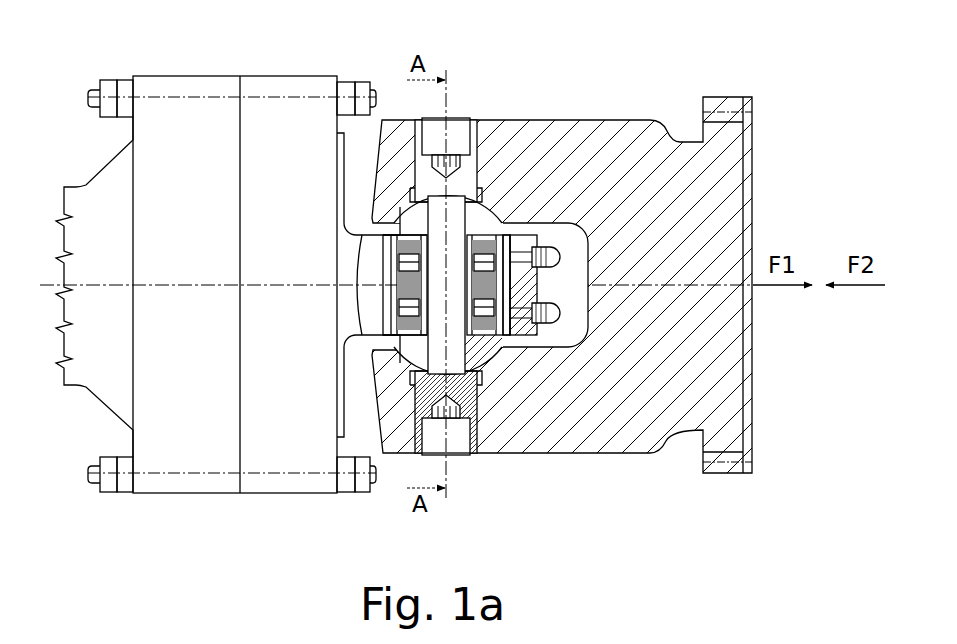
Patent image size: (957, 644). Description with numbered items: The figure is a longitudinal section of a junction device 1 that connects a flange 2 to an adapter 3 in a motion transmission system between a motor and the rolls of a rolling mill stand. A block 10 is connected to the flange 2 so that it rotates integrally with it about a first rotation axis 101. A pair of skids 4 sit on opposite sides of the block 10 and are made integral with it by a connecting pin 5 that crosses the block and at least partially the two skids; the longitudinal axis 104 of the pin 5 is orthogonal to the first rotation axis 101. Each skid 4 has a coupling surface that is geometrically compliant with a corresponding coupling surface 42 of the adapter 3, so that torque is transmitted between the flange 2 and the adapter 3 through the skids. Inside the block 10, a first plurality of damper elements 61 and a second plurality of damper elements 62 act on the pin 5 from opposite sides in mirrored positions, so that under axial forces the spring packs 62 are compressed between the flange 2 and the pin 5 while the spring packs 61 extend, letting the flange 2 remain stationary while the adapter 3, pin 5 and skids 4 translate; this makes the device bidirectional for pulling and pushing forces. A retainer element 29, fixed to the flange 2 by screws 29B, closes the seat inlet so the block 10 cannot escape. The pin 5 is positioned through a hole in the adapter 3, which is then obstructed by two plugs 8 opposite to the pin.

The junction device 1 is at (482, 230).
The flange 2 is at (272, 203).
The adapter 3 is at (600, 163).
The skid 4 is at (410, 355).
The connecting pin 5 is at (456, 328).
The plug 8 is at (458, 180).
The block 10 is at (418, 342).
The retainer element 29 is at (542, 222).
The screws 29B is at (560, 302).
The coupling surface 42 is at (502, 213).
The first damper element 61 is at (504, 343).
The second damper element 62 is at (384, 342).
The first rotation axis 101 is at (112, 288).
The longitudinal axis 104 is at (442, 258).